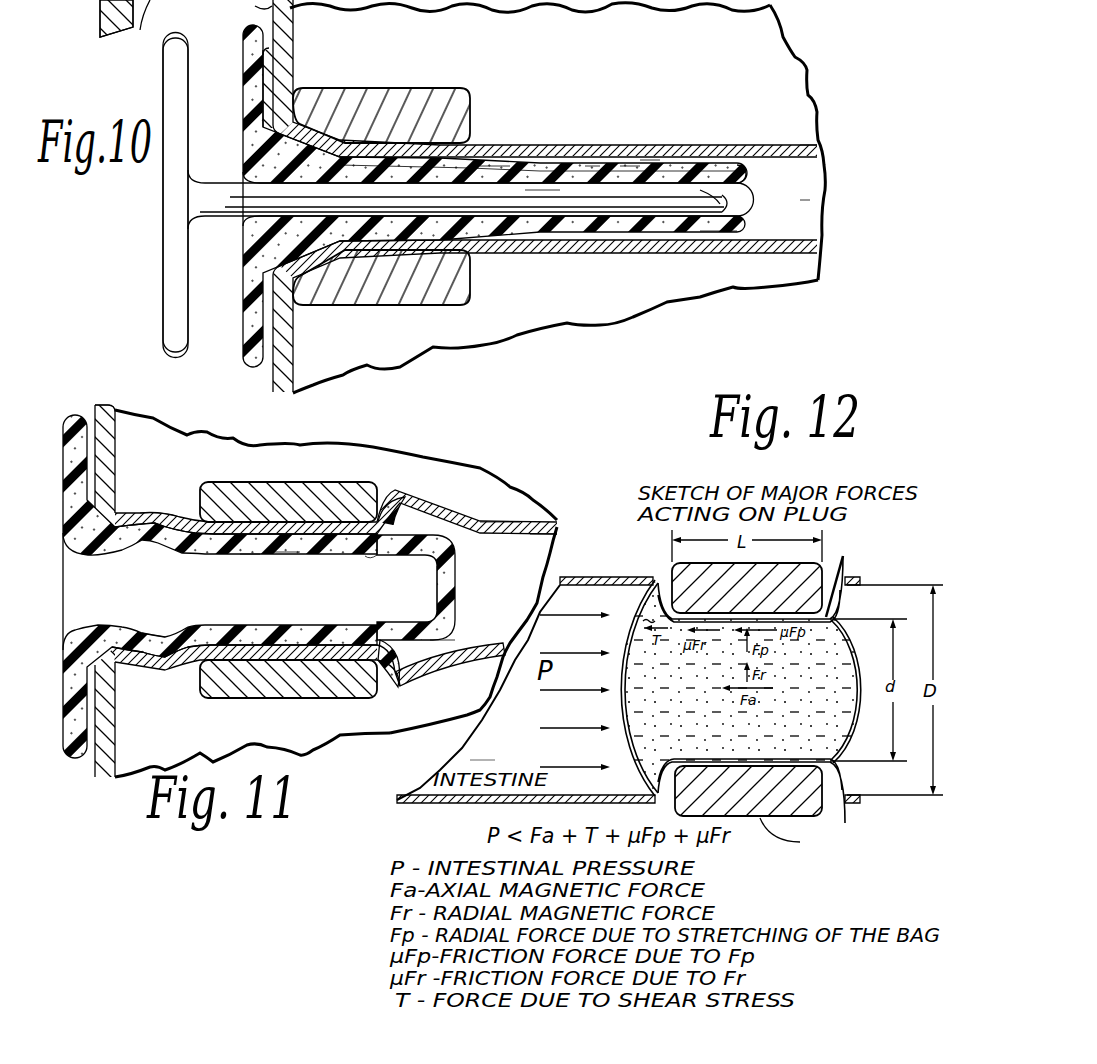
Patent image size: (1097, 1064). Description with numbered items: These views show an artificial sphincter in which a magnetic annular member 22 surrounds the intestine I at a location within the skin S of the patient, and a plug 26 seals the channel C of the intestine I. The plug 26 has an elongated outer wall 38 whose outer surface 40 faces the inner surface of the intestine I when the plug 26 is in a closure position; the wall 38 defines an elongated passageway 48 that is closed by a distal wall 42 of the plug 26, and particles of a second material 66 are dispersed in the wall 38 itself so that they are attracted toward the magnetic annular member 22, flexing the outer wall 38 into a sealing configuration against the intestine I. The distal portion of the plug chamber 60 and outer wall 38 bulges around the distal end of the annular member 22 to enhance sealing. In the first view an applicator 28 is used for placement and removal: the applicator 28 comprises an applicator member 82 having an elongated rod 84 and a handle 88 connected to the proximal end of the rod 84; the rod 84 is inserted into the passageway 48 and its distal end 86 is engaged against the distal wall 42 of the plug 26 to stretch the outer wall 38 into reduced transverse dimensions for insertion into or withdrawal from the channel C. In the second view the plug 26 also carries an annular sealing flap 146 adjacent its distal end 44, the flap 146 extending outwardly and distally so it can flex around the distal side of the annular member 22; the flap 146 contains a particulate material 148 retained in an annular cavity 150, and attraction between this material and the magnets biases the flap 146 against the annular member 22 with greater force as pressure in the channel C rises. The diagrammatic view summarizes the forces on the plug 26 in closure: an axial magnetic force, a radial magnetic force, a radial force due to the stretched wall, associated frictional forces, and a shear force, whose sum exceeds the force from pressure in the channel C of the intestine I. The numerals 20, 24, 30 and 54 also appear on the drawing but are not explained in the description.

In FIG. 10, the plug 20 is at (747, 172).
In FIG. 11, the plug 20 is at (458, 576).
In FIG. 10, the annular member 22 is at (480, 99).
In FIG. 11, the annular member 22 is at (312, 482).
In FIG. 12, the annular member 22 is at (796, 720).
In FIG. 10, the rod 24 is at (745, 200).
In FIG. 10, the plug 26 is at (650, 232).
In FIG. 11, the plug 26 is at (162, 660).
In FIG. 12, the plug 26 is at (625, 727).
In FIG. 10, the applicator 28 is at (163, 255).
In FIG. 12, the bag end 30 is at (668, 575).
In FIG. 10, the outer wall 38 is at (628, 166).
In FIG. 11, the outer wall 38 is at (250, 557).
In FIG. 10, the outer surface 40 is at (645, 160).
In FIG. 10, the distal wall 42 is at (746, 228).
In FIG. 11, the distal wall 42 is at (457, 606).
In FIG. 11, the distal end 44 is at (457, 554).
In FIG. 10, the passageway 48 is at (592, 166).
In FIG. 11, the passageway 48 is at (148, 577).
In FIG. 10, the sheath 54 is at (244, 68).
In FIG. 11, the sheath 54 is at (63, 477).
In FIG. 12, the plug chamber 60 is at (634, 712).
In FIG. 10, the second material 66 is at (503, 165).
In FIG. 11, the second material 66 is at (293, 550).
In FIG. 10, the applicator member 82 is at (163, 212).
In FIG. 10, the rod 84 is at (527, 190).
In FIG. 10, the distal end 86 is at (700, 190).
In FIG. 10, the handle 88 is at (163, 292).
In FIG. 11, the sealing flap 146 is at (386, 496).
In FIG. 11, the particulate material 148 is at (365, 556).
In FIG. 11, the annular cavity 150 is at (380, 652).
In FIG. 10, the intestine I is at (818, 148).
In FIG. 11, the intestine I is at (499, 520).
In FIG. 12, the intestine I is at (575, 578).
In FIG. 10, the channel C is at (818, 183).
In FIG. 11, the channel C is at (540, 522).
In FIG. 12, the channel C is at (490, 757).
In FIG. 10, the skin S is at (258, 6).
In FIG. 11, the skin S is at (93, 406).